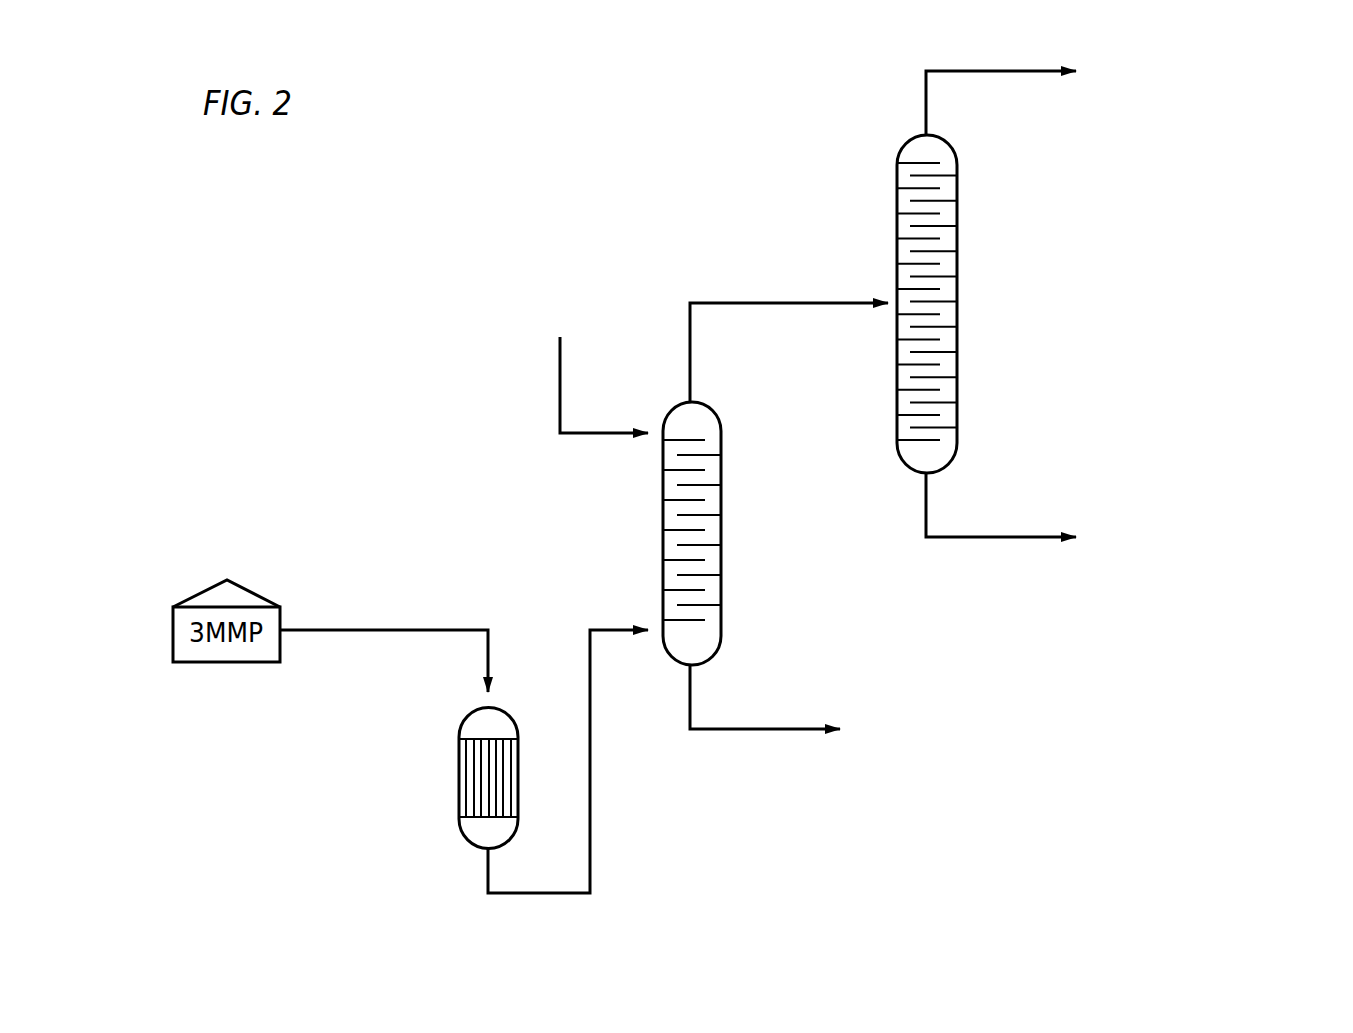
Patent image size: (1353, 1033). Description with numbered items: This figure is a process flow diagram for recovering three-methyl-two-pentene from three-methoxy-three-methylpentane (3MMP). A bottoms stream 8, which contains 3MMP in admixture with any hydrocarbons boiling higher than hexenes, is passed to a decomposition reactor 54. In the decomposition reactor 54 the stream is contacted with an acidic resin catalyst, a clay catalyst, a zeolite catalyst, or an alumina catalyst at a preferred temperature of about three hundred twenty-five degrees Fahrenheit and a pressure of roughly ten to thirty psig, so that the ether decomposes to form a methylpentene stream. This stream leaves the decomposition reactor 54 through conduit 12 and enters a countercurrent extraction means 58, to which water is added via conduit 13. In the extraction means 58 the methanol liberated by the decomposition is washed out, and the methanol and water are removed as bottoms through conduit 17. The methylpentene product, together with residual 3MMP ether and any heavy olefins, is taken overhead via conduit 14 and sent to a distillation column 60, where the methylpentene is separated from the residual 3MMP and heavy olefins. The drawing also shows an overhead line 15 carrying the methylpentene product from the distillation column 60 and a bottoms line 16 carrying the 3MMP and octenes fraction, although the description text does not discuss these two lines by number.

The bottoms stream 8 is at (378, 630).
The conduit 12 is at (601, 628).
The conduit 13 is at (558, 380).
The conduit 14 is at (789, 300).
The 3-methyl-2-pentene product stream 15 is at (1003, 68).
The 3MMP/octenes recycle stream 16 is at (1003, 536).
The conduit 17 is at (767, 727).
The decomposition reactor 54 is at (459, 771).
The countercurrent extraction means 58 is at (725, 438).
The distillation column 60 is at (960, 190).